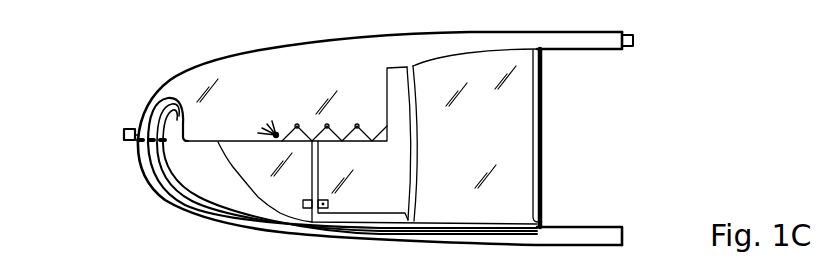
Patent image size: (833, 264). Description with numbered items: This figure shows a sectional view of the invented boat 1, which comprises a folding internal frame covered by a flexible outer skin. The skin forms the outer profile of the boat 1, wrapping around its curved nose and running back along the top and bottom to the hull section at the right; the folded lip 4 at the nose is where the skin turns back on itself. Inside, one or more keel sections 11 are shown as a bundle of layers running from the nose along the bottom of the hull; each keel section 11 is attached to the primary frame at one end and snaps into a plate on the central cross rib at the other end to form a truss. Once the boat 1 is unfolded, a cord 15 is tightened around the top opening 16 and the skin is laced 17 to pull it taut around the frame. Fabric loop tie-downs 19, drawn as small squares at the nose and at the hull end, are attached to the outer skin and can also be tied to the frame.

The boat 1 is at (168, 65).
The lip 4 is at (143, 97).
The keel sections 11 is at (163, 163).
The cord 15 is at (275, 133).
The top opening 16 is at (508, 50).
The lacing 17 is at (325, 128).
The fabric loop tie-downs 19 is at (123, 132).